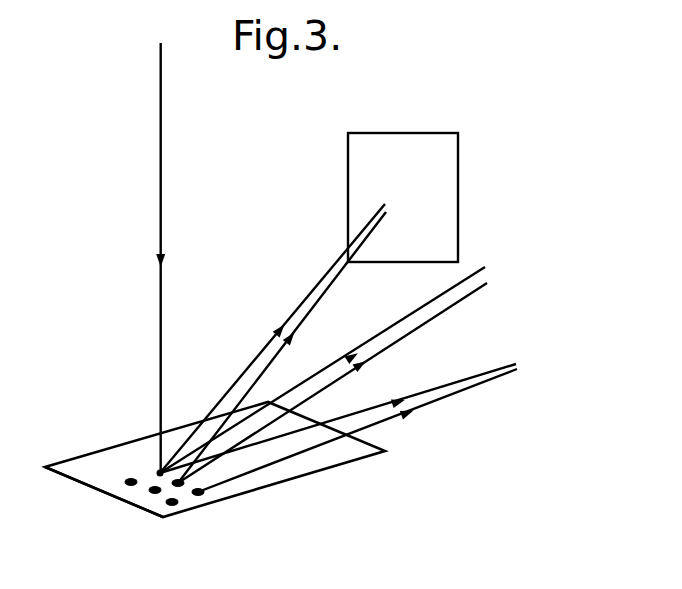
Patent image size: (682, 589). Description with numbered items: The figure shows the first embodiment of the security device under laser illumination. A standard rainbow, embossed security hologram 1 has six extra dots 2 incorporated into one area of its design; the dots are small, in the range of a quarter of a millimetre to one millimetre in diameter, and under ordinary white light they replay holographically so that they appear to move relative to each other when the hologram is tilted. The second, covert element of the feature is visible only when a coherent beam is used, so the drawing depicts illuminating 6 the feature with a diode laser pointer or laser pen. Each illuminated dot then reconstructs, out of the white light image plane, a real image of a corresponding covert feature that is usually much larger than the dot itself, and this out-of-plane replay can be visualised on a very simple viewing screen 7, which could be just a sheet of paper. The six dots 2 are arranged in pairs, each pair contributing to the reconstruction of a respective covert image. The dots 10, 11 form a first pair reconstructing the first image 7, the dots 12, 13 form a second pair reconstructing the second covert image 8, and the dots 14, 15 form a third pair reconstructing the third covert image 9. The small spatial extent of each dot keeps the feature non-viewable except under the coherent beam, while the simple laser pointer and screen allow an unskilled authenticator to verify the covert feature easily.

The security hologram 1 is at (337, 465).
The dots 2 is at (140, 512).
The laser illumination 6 is at (162, 213).
The viewing screen 7 is at (371, 133).
The second covert image 8 is at (528, 273).
The third covert image 9 is at (561, 362).
The dot 10 is at (160, 473).
The dot 11 is at (173, 504).
The dot 12 is at (153, 491).
The dot 13 is at (180, 481).
The dot 14 is at (128, 482).
The dot 15 is at (200, 494).